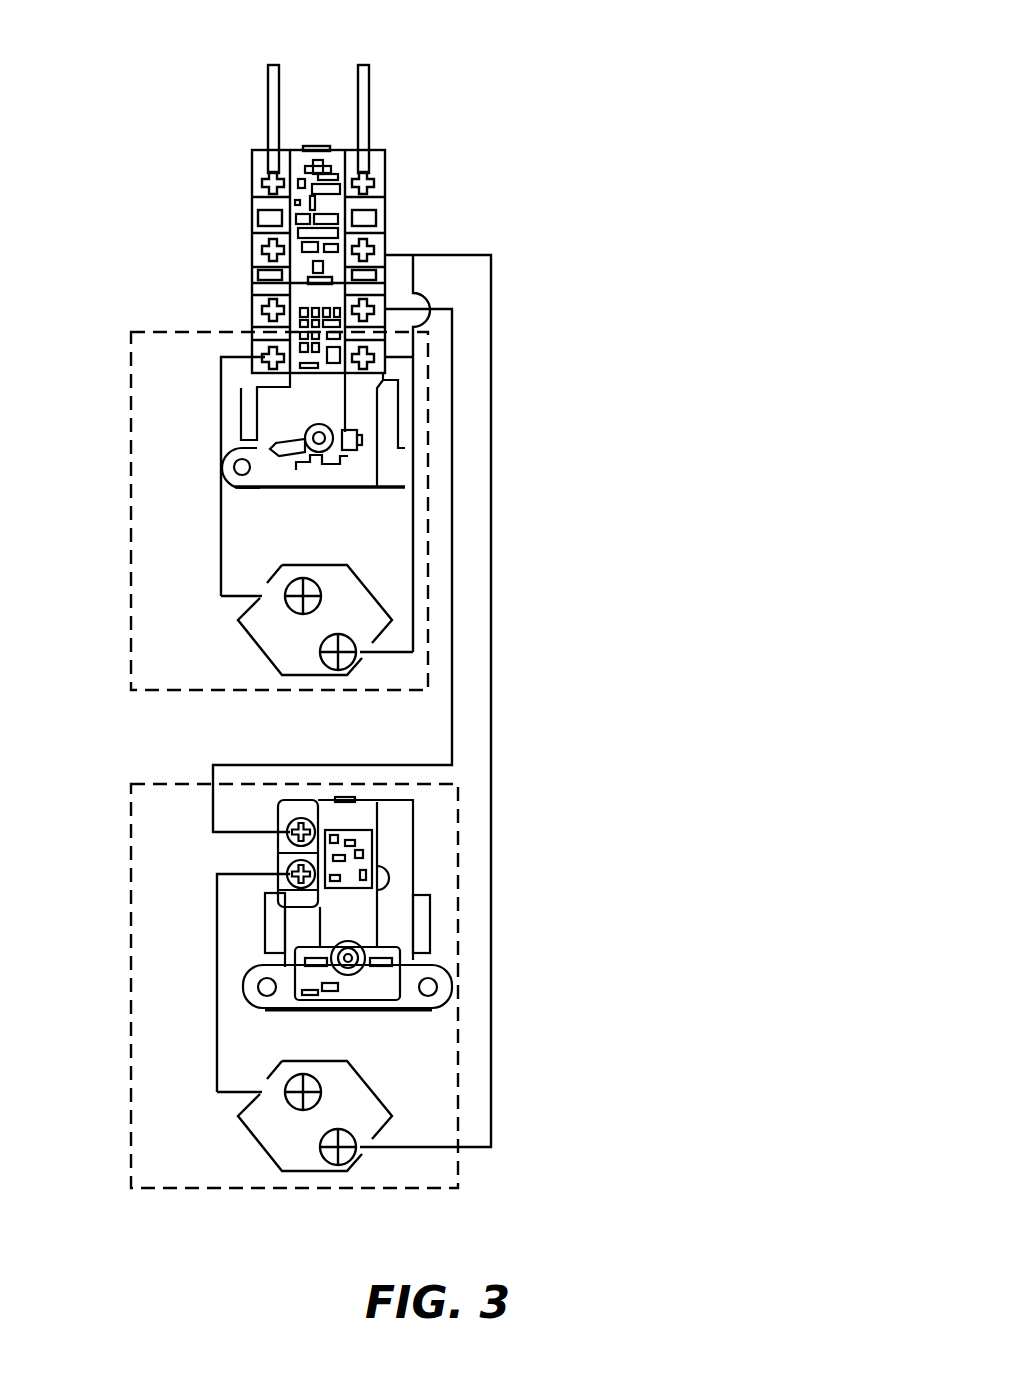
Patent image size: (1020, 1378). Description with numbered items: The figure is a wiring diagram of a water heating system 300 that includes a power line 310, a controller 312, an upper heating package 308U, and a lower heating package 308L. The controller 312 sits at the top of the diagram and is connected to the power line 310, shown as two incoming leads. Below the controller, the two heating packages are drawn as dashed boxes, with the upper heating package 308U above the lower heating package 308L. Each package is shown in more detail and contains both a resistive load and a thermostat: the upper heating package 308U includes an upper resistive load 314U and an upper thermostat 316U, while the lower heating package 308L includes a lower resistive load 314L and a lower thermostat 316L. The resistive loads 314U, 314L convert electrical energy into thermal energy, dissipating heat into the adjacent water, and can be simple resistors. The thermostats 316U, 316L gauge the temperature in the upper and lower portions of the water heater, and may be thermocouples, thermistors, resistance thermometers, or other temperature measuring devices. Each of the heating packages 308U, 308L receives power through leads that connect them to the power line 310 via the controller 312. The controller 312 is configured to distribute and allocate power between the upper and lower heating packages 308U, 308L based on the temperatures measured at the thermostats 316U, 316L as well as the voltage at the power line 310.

The water heating system 300 is at (722, 142).
The power line 310 is at (208, 95).
The controller 312 is at (483, 188).
The upper heating package 308U is at (430, 535).
The lower heating package 308L is at (460, 993).
The upper resistive load 314U is at (240, 650).
The lower resistive load 314L is at (250, 1148).
The upper thermostat 316U is at (403, 423).
The lower thermostat 316L is at (447, 913).